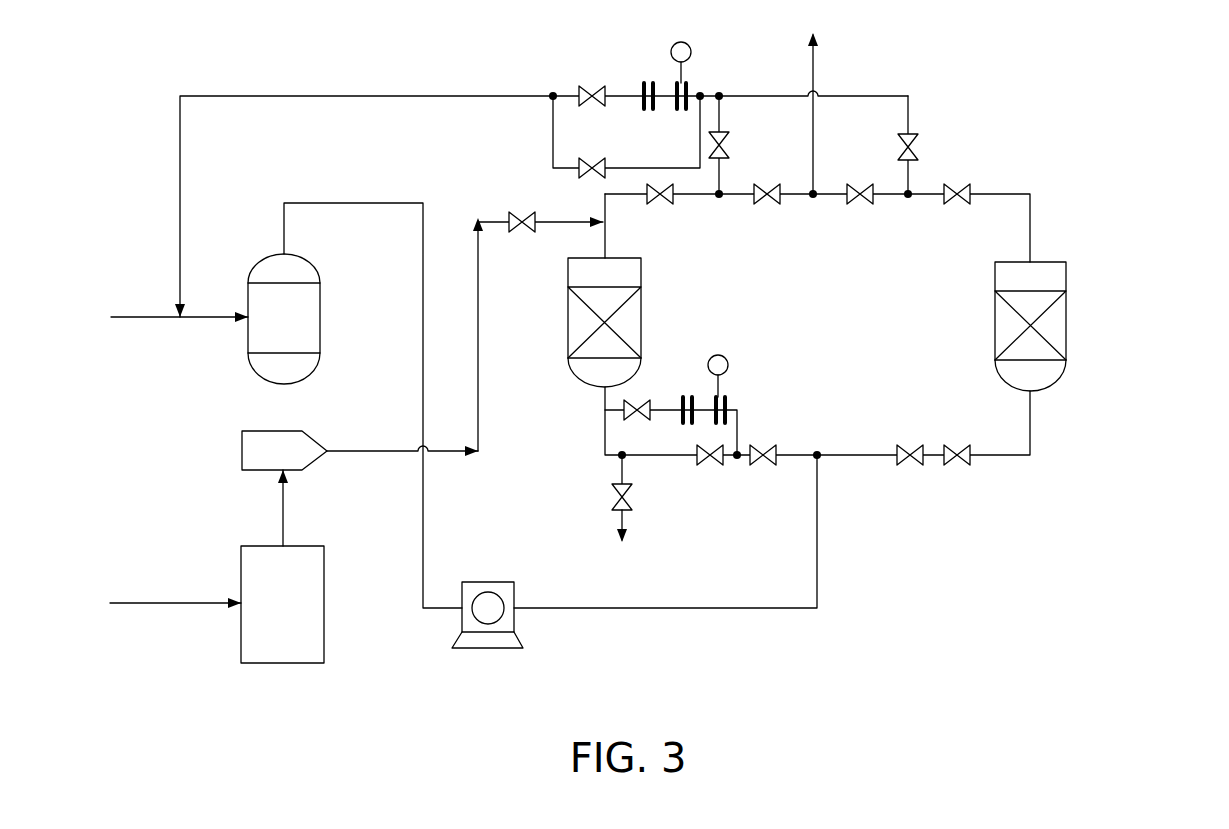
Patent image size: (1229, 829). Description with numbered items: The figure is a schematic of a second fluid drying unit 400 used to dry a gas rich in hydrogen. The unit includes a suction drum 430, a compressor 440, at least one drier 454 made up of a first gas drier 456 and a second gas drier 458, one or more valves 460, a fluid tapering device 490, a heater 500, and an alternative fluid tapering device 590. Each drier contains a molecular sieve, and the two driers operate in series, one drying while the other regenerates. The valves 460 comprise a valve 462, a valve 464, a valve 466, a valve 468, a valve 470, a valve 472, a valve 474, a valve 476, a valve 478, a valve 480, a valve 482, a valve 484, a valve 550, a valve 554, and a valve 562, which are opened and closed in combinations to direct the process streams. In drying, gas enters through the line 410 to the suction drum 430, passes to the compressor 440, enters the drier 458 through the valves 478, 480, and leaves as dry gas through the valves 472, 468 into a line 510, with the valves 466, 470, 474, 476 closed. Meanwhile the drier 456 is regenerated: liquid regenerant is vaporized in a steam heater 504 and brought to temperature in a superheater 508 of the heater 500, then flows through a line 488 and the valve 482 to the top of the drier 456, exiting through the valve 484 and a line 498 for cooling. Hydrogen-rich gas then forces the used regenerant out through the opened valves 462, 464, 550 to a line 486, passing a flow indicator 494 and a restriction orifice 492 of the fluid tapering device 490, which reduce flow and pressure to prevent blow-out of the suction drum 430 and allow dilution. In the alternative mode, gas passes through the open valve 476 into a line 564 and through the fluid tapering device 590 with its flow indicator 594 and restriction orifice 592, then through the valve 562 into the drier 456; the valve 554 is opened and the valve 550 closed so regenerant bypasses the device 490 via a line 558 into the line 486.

The second fluid drying unit 400 is at (1010, 85).
The line 410 is at (142, 318).
The suction drum 430 is at (321, 320).
The compressor 440 is at (500, 582).
The drier 454 is at (1091, 308).
The first gas drier 456 is at (642, 320).
The second gas drier 458 is at (1067, 325).
The valves 460 is at (950, 585).
The valve 462 is at (660, 205).
The valve 464 is at (729, 140).
The valve 466 is at (767, 205).
The valve 468 is at (860, 205).
The valve 470 is at (918, 145).
The valve 472 is at (957, 205).
The valve 474 is at (707, 466).
The valve 476 is at (765, 466).
The valve 478 is at (905, 445).
The valve 480 is at (958, 445).
The valve 482 is at (520, 212).
The valve 484 is at (611, 490).
The line 486 is at (292, 95).
The line 488 is at (374, 451).
The fluid tapering device 490 is at (649, 67).
The restriction orifice 492 is at (646, 82).
The flow indicator 494 is at (692, 52).
The line 498 is at (612, 520).
The heater 500 is at (368, 634).
The steam heater 504 is at (217, 566).
The superheater 508 is at (284, 450).
The line 510 is at (816, 58).
The valve 550 is at (580, 86).
The valve 554 is at (586, 158).
The line 558 is at (660, 168).
The valve 562 is at (624, 410).
The line 564 is at (738, 422).
The fluid tapering device 590 is at (744, 354).
The restriction orifice 592 is at (683, 397).
The flow indicator 594 is at (755, 375).